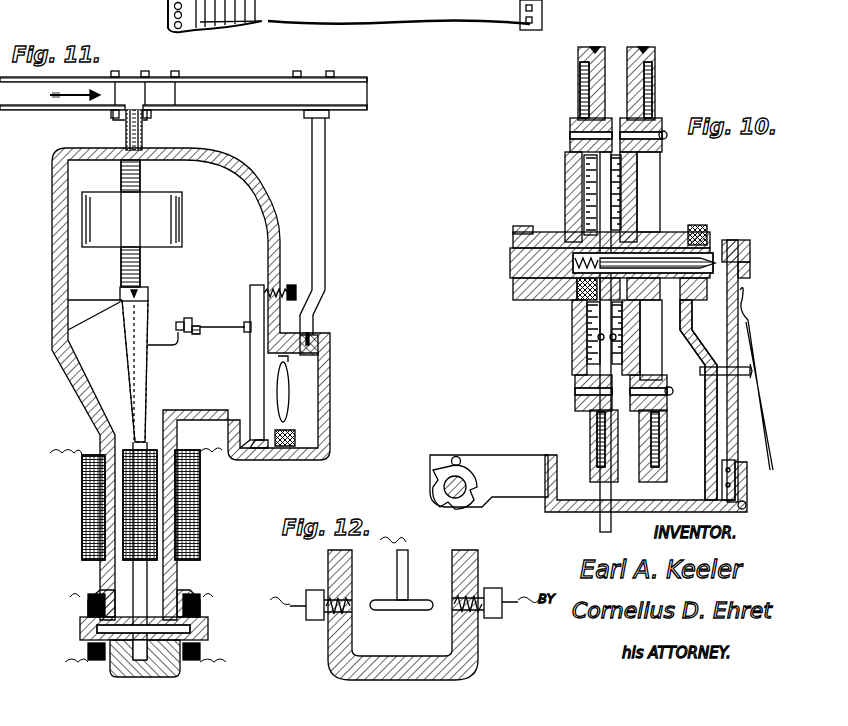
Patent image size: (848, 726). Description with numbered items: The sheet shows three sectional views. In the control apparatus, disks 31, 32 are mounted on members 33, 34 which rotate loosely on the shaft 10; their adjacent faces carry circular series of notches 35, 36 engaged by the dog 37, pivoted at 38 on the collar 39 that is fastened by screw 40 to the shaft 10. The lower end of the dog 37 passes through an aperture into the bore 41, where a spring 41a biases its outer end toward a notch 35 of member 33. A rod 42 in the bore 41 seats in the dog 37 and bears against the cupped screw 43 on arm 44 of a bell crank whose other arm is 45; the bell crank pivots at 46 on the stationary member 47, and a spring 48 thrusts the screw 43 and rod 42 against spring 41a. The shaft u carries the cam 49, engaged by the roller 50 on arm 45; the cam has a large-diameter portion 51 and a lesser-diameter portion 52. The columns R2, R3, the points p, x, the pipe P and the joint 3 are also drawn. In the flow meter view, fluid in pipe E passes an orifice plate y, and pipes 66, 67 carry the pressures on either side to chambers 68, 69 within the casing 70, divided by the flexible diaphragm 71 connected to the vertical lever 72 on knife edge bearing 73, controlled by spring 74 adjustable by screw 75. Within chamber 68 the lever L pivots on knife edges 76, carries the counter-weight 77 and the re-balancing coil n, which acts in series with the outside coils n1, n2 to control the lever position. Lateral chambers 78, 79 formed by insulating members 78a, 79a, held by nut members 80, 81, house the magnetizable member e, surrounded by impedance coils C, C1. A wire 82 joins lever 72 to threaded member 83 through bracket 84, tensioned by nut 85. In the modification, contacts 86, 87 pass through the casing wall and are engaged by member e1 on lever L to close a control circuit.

In FIG. 11, the pipe flange joint 3 is at (175, 95).
In FIG. 10, the shaft 10 is at (512, 260).
In FIG. 10, the disk 31 is at (580, 88).
In FIG. 10, the disk 32 is at (653, 90).
In FIG. 10, the member 33 is at (567, 194).
In FIG. 10, the member 34 is at (630, 206).
In FIG. 10, the notches 35 is at (584, 176).
In FIG. 10, the notches 36 is at (632, 186).
In FIG. 10, the dog 37 is at (604, 200).
In FIG. 10, the pivot 38 is at (617, 228).
In FIG. 10, the collar 39 is at (698, 226).
In FIG. 10, the screw 40 is at (572, 314).
In FIG. 10, the bore 41 is at (692, 308).
In FIG. 10, the spring 41a is at (545, 300).
In FIG. 10, the rod 42 is at (712, 262).
In FIG. 10, the cupped screw 43 is at (750, 266).
In FIG. 10, the arm 44 is at (738, 336).
In FIG. 10, the arm 45 is at (630, 513).
In FIG. 10, the pivot 46 is at (746, 508).
In FIG. 10, the stationary member 47 is at (705, 406).
In FIG. 10, the spring 48 is at (748, 318).
In FIG. 10, the cam 49 is at (465, 470).
In FIG. 10, the cam follower roller 50 is at (454, 457).
In FIG. 10, the large-diameter portion of cam 51 is at (455, 510).
In FIG. 10, the lesser-diameter portion of cam 52 is at (440, 473).
In FIG. 11, the pipe 66 is at (142, 138).
In FIG. 11, the pipe 67 is at (327, 168).
In FIG. 11, the chamber 68 is at (240, 192).
In FIG. 11, the chamber 69 is at (305, 380).
In FIG. 11, the casing structure 70 is at (52, 291).
In FIG. 12, the casing structure 70 is at (478, 565).
In FIG. 11, the flexible diaphragm 71 is at (286, 363).
In FIG. 11, the vertical lever 72 is at (250, 375).
In FIG. 11, the knife edge bearing 73 is at (264, 452).
In FIG. 11, the spring 74 is at (258, 288).
In FIG. 11, the screw 75 is at (292, 285).
In FIG. 11, the knife edges 76 is at (150, 297).
In FIG. 11, the counter-weight 77 is at (182, 217).
In FIG. 11, the lateral extension chamber 78 is at (205, 637).
In FIG. 11, the lateral chamber forming member 78a is at (200, 629).
In FIG. 11, the lateral extension chamber 79 is at (82, 637).
In FIG. 11, the lateral chamber forming member 79a is at (97, 629).
In FIG. 11, the nut member 80 is at (185, 592).
In FIG. 11, the nut member 81 is at (110, 665).
In FIG. 11, the metal wire or ribbon 82 is at (215, 321).
In FIG. 11, the threaded member 83 is at (192, 334).
In FIG. 11, the bracket 84 is at (182, 345).
In FIG. 11, the nut 85 is at (182, 322).
In FIG. 12, the contact 86 is at (355, 613).
In FIG. 12, the contact 87 is at (450, 612).
In FIG. 11, the pipe or conduit E is at (345, 108).
In FIG. 11, the orifice plate y is at (180, 82).
In FIG. 11, the vertical lever L is at (150, 388).
In FIG. 12, the vertical lever L is at (408, 566).
In FIG. 11, the re-balancing coil n is at (155, 505).
In FIG. 11, the co-acting coil n1 is at (202, 520).
In FIG. 11, the co-acting coil n2 is at (84, 528).
In FIG. 11, the impedance coil C is at (200, 602).
In FIG. 11, the impedance coil C1 is at (88, 602).
In FIG. 11, the magnetizable member e is at (145, 660).
In FIG. 12, the member e1 is at (388, 598).
In FIG. 10, the pipe P is at (468, 24).
In FIG. 10, the point p is at (594, 46).
In FIG. 10, the point x is at (645, 46).
In FIG. 10, the column R2 is at (650, 45).
In FIG. 10, the column R3 is at (598, 46).
In FIG. 10, the shaft u is at (478, 508).